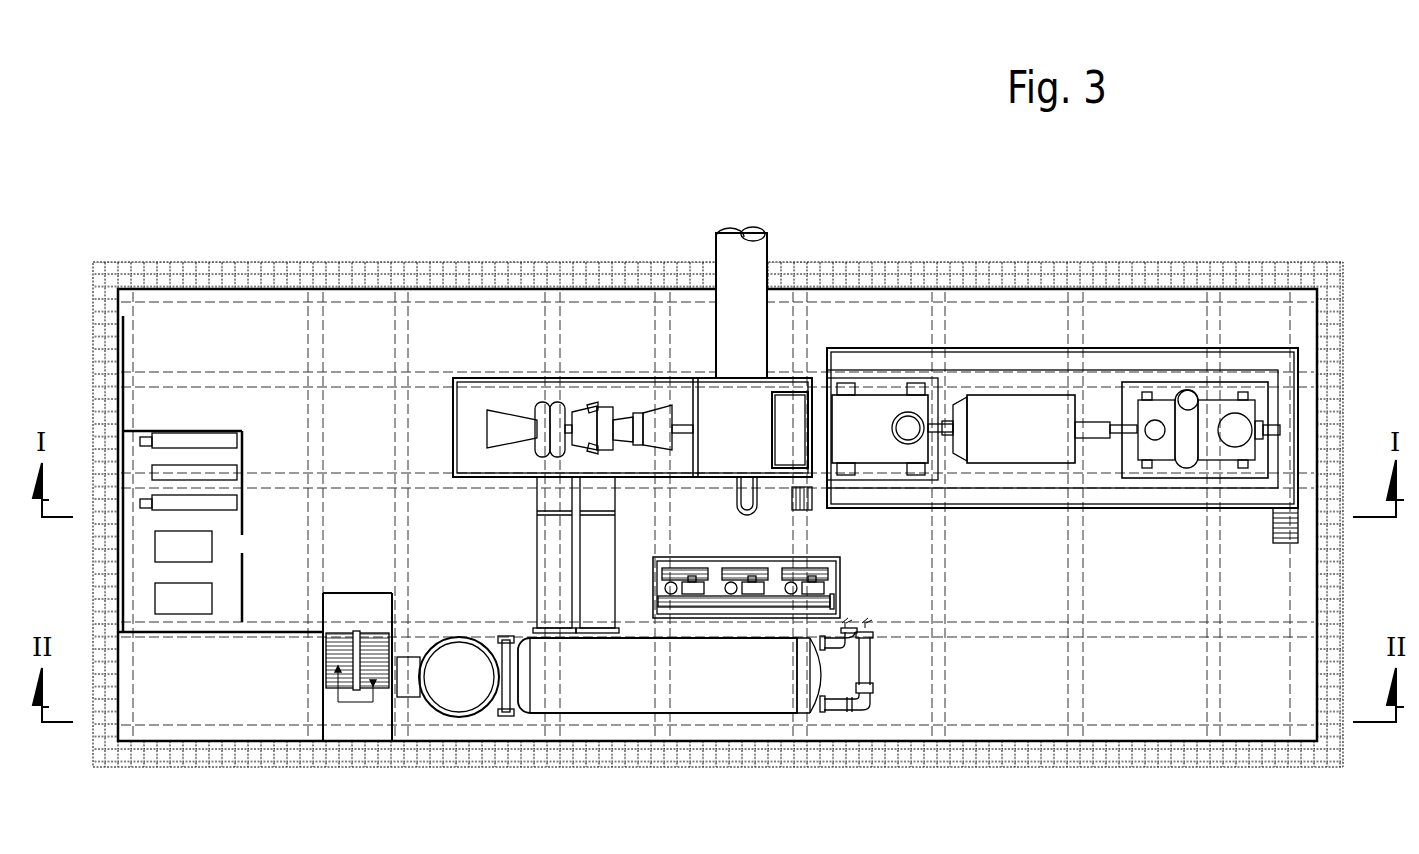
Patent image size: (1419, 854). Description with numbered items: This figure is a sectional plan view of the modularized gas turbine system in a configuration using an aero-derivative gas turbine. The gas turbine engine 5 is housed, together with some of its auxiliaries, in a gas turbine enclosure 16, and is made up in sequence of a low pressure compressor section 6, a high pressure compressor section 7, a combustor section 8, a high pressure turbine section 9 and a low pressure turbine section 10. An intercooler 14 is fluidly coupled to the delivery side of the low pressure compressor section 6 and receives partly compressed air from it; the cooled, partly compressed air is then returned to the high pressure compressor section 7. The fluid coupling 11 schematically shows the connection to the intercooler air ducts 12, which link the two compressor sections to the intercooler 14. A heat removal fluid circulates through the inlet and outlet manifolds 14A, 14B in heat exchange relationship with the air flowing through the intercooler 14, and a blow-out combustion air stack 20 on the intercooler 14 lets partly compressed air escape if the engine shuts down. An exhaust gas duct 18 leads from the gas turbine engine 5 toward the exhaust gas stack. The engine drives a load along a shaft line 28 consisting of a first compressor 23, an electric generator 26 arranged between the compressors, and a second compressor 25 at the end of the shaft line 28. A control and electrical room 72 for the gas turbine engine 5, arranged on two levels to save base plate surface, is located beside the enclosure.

The gas turbine engine 5 is at (586, 421).
The low pressure compressor section 6 is at (514, 435).
The high pressure compressor section 7 is at (580, 410).
The combustor section 8 is at (605, 445).
The high pressure turbine section 9 is at (624, 420).
The low pressure turbine section 10 is at (662, 417).
The fluid coupling 11 is at (556, 403).
The intercooler air ducts 12 is at (592, 598).
The intercooler 14 is at (747, 678).
The inlet manifold 14A is at (848, 628).
The outlet manifold 14B is at (868, 663).
The gas turbine enclosure 16 is at (453, 430).
The exhaust gas duct 18 is at (728, 250).
The blow-out combustion air stack 20 is at (430, 685).
The first compressor 23 is at (882, 448).
The second compressor 25 is at (1163, 450).
The electric generator 26 is at (1017, 418).
The shaft line 28 is at (942, 432).
The control and electrical room 72 is at (188, 520).